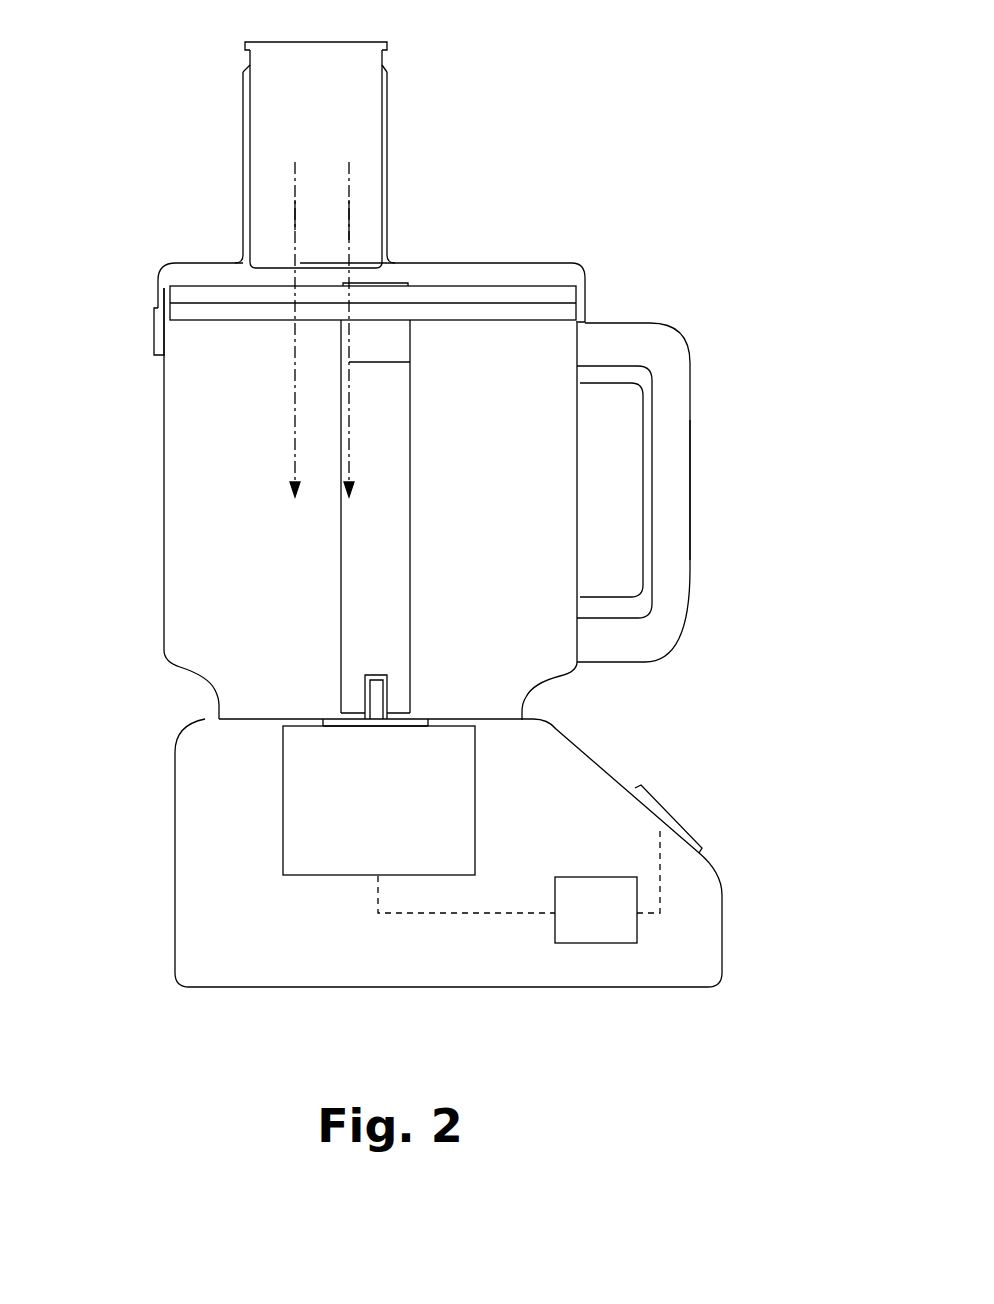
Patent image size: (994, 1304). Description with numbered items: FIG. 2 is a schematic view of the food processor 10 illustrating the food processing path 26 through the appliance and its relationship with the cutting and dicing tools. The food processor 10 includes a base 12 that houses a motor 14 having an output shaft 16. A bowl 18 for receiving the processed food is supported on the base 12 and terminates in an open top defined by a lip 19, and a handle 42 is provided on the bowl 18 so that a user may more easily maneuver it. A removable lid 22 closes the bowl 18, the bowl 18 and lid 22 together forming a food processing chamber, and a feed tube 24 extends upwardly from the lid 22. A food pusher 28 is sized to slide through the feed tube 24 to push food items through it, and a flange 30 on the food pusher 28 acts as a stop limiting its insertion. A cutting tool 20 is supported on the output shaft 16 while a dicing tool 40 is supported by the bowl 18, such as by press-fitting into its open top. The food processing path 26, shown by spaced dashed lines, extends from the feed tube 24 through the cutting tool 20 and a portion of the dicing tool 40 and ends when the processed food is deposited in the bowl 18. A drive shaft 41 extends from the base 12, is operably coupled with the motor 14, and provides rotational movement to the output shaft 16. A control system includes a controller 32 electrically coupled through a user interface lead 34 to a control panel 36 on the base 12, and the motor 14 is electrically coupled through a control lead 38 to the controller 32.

The food processor 10 is at (143, 32).
The base 12 is at (177, 748).
The motor 14 is at (303, 838).
The output shaft 16 is at (340, 535).
The bowl 18 is at (578, 462).
The lip 19 is at (163, 305).
The cutting tool 20 is at (573, 294).
The removable lid 22 is at (496, 263).
The feed tube 24 is at (243, 148).
The food processing path 26 is at (295, 209).
The food pusher 28 is at (272, 192).
The flange 30 is at (387, 42).
The controller 32 is at (608, 944).
The user interface lead 34 is at (660, 882).
The control panel 36 is at (681, 823).
The control lead 38 is at (412, 916).
The dicing tool 40 is at (576, 312).
The drive shaft 41 is at (374, 675).
The handle 42 is at (687, 536).